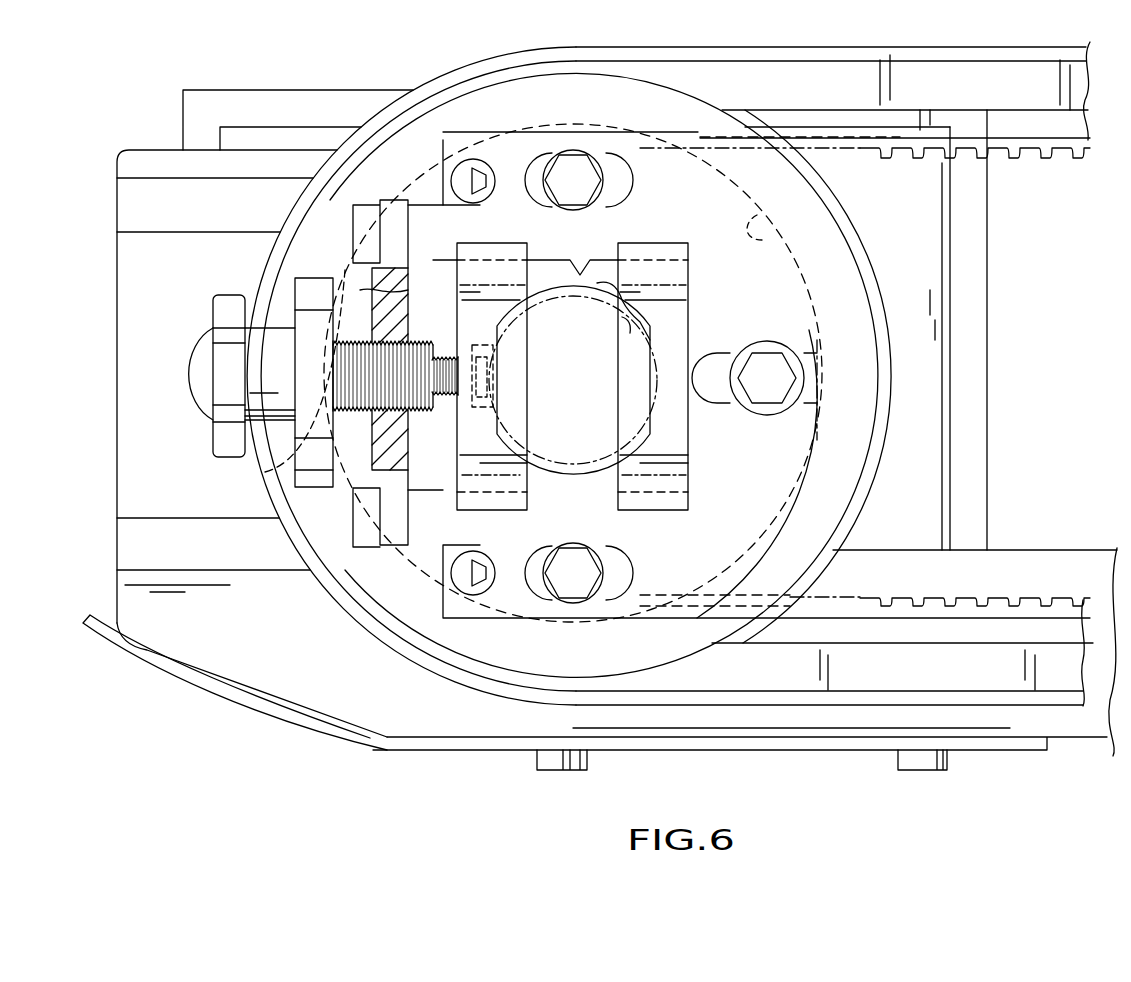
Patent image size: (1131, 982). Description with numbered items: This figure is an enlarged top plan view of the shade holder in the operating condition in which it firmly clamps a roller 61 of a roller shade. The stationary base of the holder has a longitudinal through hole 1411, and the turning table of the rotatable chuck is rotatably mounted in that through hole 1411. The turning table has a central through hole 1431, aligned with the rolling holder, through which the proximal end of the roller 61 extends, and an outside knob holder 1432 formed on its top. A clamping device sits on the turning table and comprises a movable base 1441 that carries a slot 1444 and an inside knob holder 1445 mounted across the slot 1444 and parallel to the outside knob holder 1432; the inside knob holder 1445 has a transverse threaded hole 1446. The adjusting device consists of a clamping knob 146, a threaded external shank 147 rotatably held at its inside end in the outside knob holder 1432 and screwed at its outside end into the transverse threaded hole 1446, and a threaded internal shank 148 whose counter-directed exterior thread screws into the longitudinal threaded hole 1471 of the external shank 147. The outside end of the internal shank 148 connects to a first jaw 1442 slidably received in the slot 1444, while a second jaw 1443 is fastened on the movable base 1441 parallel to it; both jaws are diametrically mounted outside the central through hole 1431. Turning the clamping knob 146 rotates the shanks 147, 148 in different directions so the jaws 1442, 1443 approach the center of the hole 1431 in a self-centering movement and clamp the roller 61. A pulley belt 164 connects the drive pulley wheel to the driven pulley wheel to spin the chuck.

The roller 61 is at (650, 333).
The clamping knob 146 is at (223, 372).
The threaded external shank 147 is at (360, 343).
The threaded internal shank 148 is at (447, 380).
The pulley belt 164 is at (1038, 150).
The longitudinal through hole 1411 is at (770, 237).
The central through hole 1431 is at (617, 305).
The outside knob holder 1432 is at (310, 323).
The movable base 1441 is at (782, 443).
The first jaw 1442 is at (503, 473).
The second jaw 1443 is at (665, 432).
The slot 1444 is at (582, 272).
The inside knob holder 1445 is at (397, 227).
The transverse threaded hole 1446 is at (357, 410).
The longitudinal threaded hole 1471 is at (265, 472).